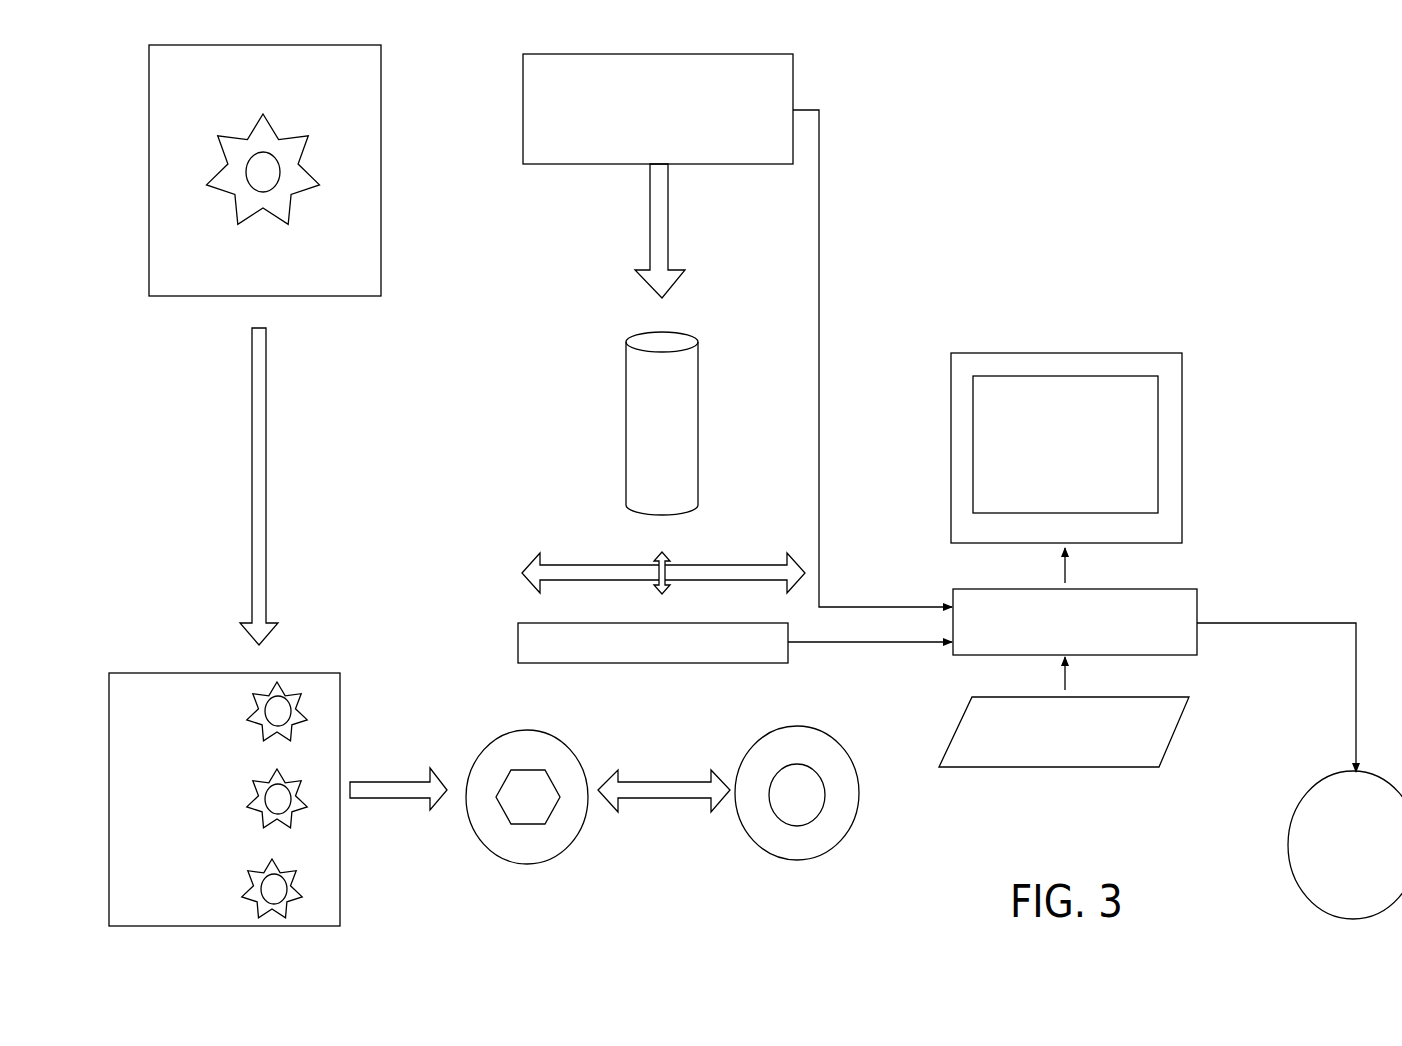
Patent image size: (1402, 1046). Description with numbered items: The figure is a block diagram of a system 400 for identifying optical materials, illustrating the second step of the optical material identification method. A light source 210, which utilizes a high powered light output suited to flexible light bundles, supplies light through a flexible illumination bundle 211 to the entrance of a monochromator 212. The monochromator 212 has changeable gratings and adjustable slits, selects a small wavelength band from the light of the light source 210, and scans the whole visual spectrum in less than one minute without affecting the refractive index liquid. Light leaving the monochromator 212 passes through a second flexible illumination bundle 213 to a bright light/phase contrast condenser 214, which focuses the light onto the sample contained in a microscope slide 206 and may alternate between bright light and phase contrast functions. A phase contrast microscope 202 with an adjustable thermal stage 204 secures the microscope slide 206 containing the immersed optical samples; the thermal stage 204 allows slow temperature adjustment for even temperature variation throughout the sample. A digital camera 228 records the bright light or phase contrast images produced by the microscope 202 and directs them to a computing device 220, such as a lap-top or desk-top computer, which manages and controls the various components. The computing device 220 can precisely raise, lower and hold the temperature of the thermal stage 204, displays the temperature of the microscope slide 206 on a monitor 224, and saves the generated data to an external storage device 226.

The system 400 is at (1060, 151).
The light source 210 is at (265, 170).
The flexible illumination bundle 211 is at (277, 486).
The monochromator 212 is at (224, 799).
The flexible illumination bundle 213 is at (398, 780).
The bright light/phase contrast condenser 214 is at (662, 810).
The digital camera 228 is at (737, 330).
The phase contrast microscope 202 is at (662, 423).
The microscope slide 206 is at (630, 573).
The thermal stage 204 is at (735, 643).
The computing device 220 is at (1147, 660).
The monitor 224 is at (1066, 448).
The storage device 226 is at (1345, 845).